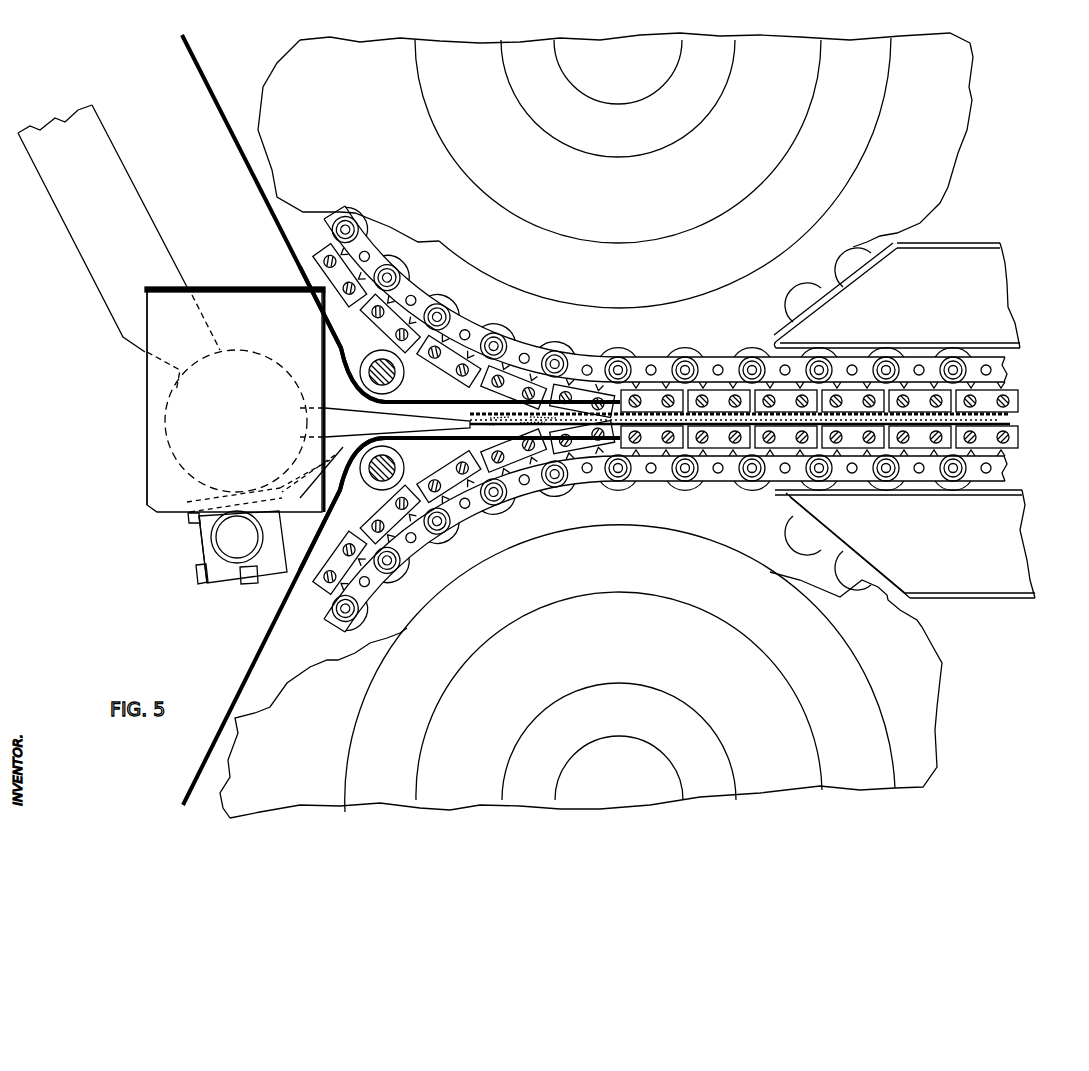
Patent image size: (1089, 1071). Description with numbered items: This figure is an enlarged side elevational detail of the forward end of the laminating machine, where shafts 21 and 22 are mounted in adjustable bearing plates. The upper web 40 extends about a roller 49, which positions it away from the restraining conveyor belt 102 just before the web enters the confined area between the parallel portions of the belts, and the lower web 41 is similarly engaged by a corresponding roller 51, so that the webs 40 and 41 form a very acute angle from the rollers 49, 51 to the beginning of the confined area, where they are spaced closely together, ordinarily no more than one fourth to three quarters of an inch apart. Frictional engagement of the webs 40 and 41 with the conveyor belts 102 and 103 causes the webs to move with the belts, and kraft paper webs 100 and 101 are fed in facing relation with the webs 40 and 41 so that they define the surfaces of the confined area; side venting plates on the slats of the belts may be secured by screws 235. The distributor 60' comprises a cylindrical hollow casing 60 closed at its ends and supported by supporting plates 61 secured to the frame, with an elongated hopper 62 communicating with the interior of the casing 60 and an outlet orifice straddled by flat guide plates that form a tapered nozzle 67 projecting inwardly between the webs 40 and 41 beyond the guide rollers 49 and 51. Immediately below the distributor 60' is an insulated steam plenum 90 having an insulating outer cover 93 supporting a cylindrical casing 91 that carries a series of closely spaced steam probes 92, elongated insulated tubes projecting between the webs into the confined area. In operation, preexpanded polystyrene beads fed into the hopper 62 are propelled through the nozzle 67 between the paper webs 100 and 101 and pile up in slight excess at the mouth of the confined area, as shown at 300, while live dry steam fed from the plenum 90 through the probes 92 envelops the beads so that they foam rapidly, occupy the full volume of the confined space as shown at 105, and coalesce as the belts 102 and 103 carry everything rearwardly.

The shaft 21 is at (600, 66).
The shaft 22 is at (626, 786).
The web 40 is at (270, 212).
The lower web 41 is at (256, 658).
The roller 49 is at (375, 354).
The roller 51 is at (401, 467).
The casing 60 is at (205, 393).
The distributor 60' is at (118, 398).
The supporting plates 61 is at (157, 461).
The hopper 62 is at (150, 235).
The nozzle 67 is at (345, 410).
The steam plenum 90 is at (205, 540).
The cylindrical casing 91 is at (233, 564).
The steam probes 92 is at (346, 478).
The insulating outer cover 93 is at (198, 566).
The paper web 100 is at (232, 136).
The paper web 101 is at (233, 705).
The restraining conveyor belt 102 is at (985, 371).
The lower endless belt 103 is at (1006, 458).
The expanded beads 105 is at (1018, 414).
The screws 235 is at (1012, 428).
The piled beads 300 is at (558, 490).